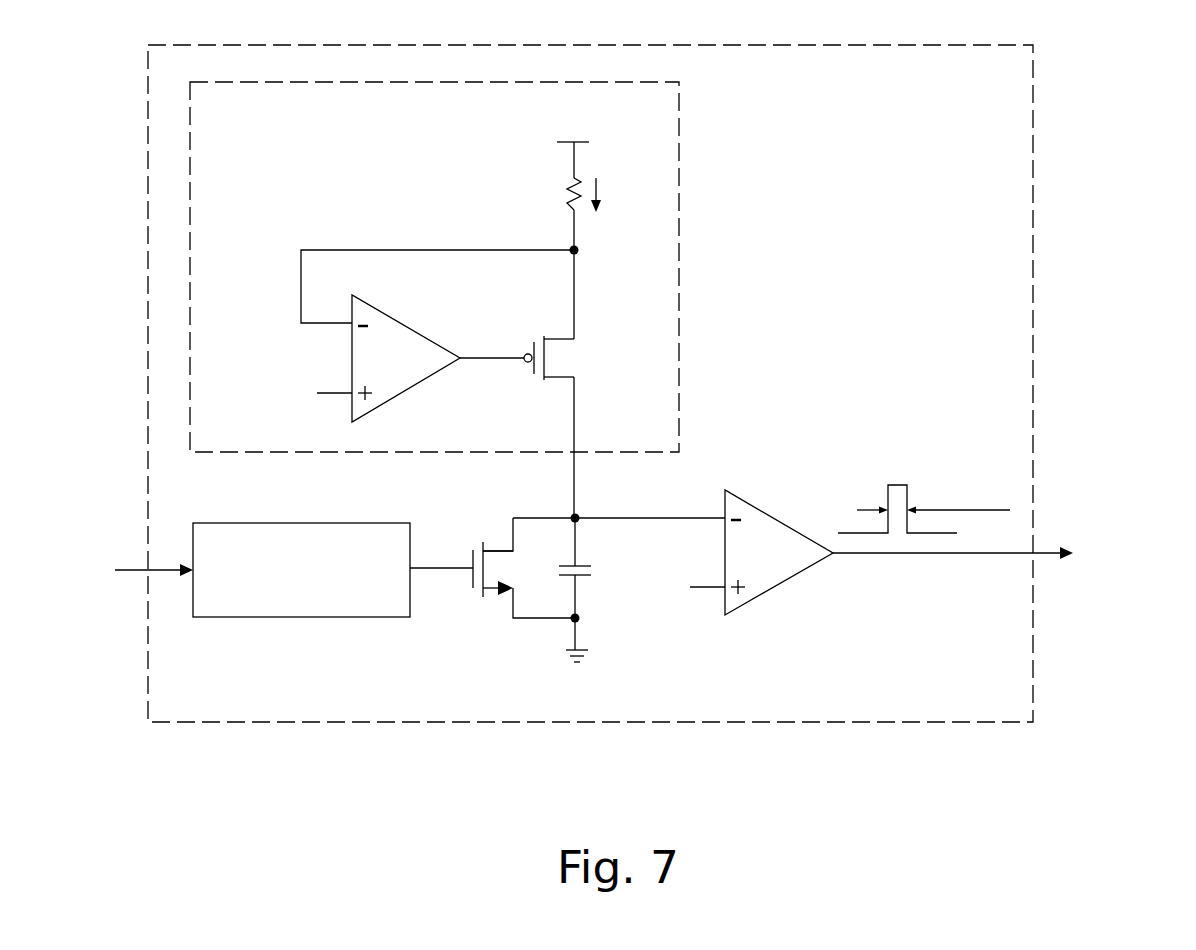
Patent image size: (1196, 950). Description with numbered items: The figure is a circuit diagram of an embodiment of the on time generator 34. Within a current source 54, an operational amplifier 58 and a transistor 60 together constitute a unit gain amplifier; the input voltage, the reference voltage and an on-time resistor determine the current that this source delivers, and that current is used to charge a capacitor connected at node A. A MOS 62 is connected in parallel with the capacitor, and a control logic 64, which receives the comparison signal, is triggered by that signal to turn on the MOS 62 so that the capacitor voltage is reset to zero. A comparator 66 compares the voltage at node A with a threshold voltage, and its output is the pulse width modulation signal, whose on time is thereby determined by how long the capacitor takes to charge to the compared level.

The on time generator 34 is at (1033, 358).
The current source 54 is at (679, 258).
The operational amplifier 58 is at (407, 325).
The transistor 60 is at (587, 357).
The MOS 62 is at (485, 602).
The control logic 64 is at (300, 617).
The comparator 66 is at (778, 518).